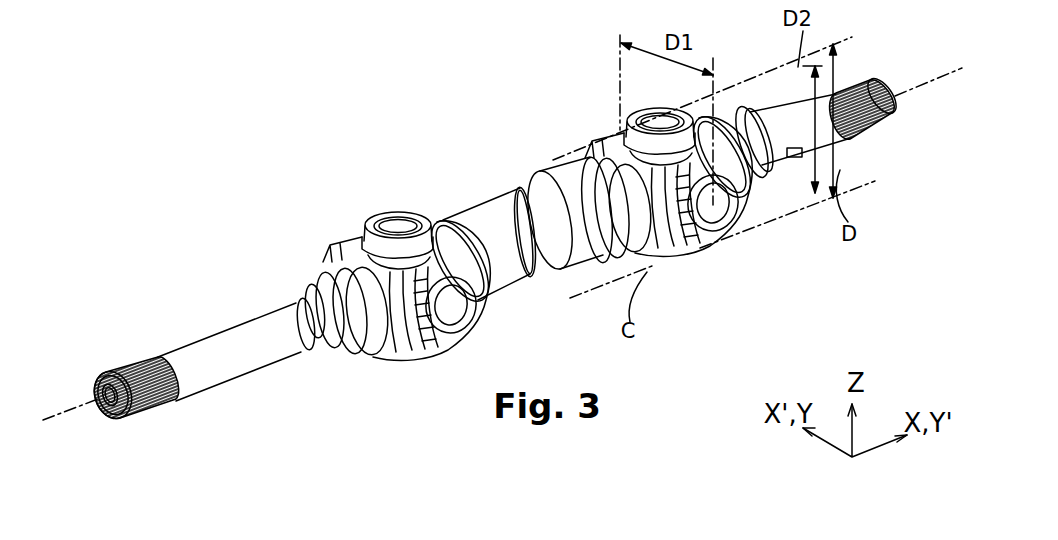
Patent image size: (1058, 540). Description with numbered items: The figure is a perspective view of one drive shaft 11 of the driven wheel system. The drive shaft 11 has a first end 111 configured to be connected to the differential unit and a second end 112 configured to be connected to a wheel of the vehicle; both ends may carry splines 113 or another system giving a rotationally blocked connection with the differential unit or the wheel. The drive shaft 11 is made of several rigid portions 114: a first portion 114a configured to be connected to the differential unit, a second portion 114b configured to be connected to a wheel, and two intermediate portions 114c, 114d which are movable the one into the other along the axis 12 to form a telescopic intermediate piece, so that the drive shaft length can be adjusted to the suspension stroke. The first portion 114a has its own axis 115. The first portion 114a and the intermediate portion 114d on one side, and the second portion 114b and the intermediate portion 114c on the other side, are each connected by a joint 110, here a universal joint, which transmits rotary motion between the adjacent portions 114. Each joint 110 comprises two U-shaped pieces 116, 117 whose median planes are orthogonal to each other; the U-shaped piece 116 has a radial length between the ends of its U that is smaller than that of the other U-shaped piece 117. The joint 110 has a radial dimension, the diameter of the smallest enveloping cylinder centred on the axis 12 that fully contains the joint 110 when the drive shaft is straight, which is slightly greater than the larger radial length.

The drive shaft 11 is at (244, 220).
The axis 12 is at (50, 415).
The joint 110 is at (430, 392).
The first end 111 is at (913, 100).
The second end 112 is at (117, 410).
The splines 113 is at (134, 362).
The rigid portions 114 is at (519, 240).
The first portion 114a is at (840, 97).
The second portion 114b is at (212, 362).
The intermediate portion 114c is at (489, 222).
The intermediate portion 114d is at (566, 193).
The axis 115 is at (947, 72).
The U-shaped piece 116 is at (746, 108).
The U-shaped piece 117 is at (613, 140).